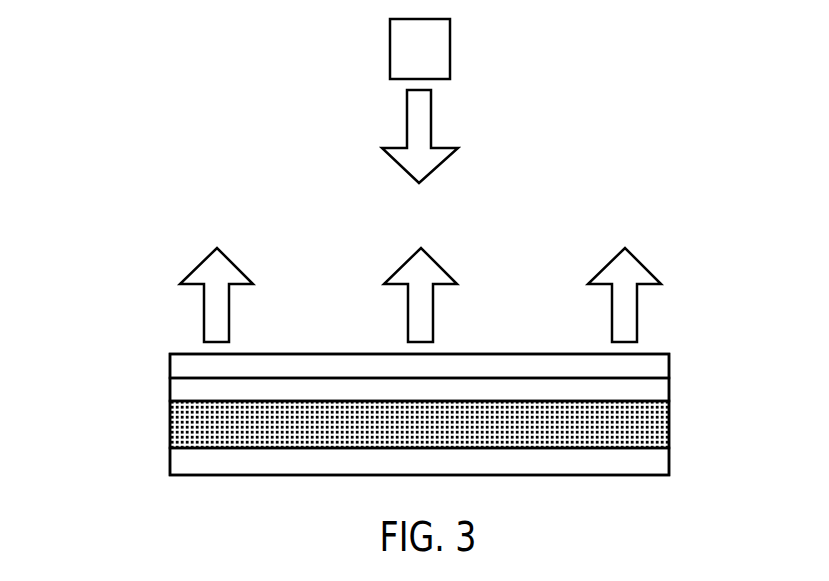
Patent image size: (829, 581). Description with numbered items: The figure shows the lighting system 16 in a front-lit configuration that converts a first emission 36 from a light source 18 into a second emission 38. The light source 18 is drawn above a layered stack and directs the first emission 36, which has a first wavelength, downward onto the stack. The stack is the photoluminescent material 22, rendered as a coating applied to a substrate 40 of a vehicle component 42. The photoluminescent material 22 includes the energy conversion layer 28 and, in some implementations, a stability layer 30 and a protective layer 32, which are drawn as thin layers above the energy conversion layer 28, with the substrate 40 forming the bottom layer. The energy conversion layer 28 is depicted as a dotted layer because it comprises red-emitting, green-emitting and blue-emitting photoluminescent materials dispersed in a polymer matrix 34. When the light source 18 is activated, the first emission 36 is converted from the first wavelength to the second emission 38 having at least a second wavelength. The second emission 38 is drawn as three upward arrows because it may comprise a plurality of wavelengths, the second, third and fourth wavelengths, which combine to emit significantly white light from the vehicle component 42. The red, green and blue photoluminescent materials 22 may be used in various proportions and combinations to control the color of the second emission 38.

The lighting system 16 is at (189, 111).
The light source 18 is at (408, 59).
The photoluminescent material 22 is at (99, 412).
The energy conversion layer 28 is at (662, 423).
The stability layer 30 is at (663, 388).
The protective layer 32 is at (663, 367).
The polymer matrix 34 is at (194, 422).
The first emission 36 is at (410, 115).
The second emission 38 is at (240, 269).
The substrate 40 is at (663, 459).
The vehicle component 42 is at (131, 331).